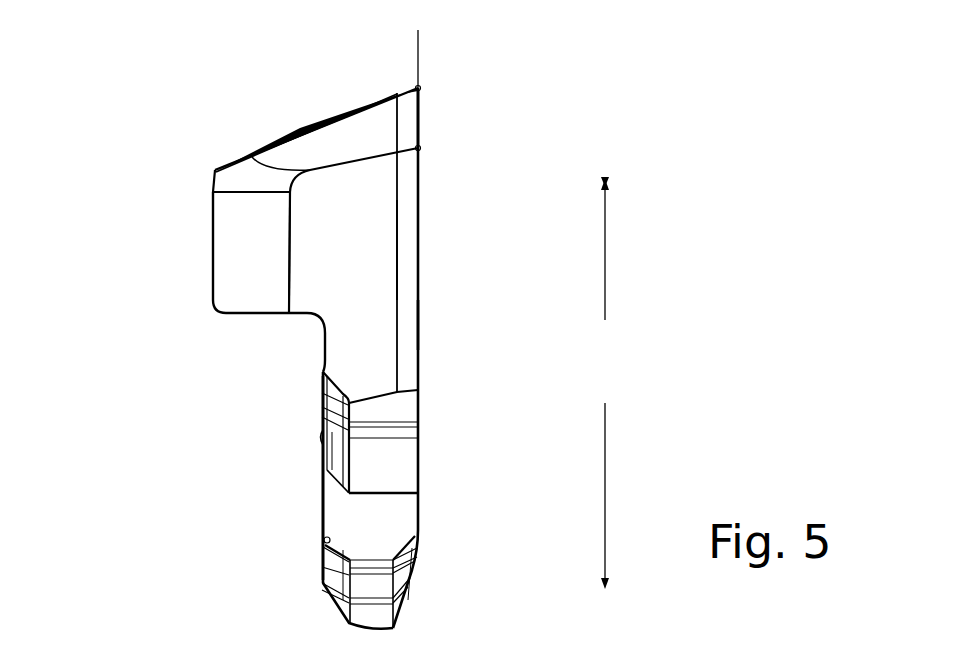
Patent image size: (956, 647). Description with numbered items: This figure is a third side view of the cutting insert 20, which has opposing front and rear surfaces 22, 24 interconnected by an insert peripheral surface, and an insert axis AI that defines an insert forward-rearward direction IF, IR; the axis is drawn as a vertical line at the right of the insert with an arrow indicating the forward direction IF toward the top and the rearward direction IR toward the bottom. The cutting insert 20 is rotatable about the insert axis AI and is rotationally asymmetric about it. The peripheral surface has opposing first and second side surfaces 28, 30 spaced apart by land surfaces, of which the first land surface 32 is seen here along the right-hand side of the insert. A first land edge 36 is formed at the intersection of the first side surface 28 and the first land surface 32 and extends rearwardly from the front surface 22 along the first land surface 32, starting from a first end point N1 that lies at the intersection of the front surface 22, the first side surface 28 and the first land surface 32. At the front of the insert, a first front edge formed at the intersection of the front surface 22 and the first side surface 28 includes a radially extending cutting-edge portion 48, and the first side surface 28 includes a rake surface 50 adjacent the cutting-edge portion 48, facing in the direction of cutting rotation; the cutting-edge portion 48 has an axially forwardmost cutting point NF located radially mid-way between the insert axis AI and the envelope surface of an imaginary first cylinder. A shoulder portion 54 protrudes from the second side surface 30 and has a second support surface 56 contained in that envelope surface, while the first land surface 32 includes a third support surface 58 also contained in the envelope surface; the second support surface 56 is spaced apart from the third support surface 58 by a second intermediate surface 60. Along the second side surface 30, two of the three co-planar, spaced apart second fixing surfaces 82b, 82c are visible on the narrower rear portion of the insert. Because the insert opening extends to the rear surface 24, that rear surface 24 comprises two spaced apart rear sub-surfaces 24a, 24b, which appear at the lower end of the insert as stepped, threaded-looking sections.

The cutting insert 20 is at (287, 336).
The front surface 22 is at (334, 287).
The rear surface 24 is at (423, 500).
The rear sub-surface 24a is at (403, 407).
The rear sub-surface 24b is at (375, 613).
The first side surface 28 is at (424, 322).
The second side surface 30 is at (316, 331).
The first land surface 32 is at (410, 269).
The first land edge 36 is at (419, 204).
The cutting-edge portion 48 is at (419, 108).
The rake surface 50 is at (419, 126).
The shoulder portion 54 is at (232, 183).
The second support surface 56 is at (240, 254).
The third support surface 58 is at (407, 232).
The second intermediate surface 60 is at (335, 254).
The second fixing surface 82b is at (320, 378).
The second fixing surface 82c is at (320, 510).
The insert axis AI is at (420, 46).
The axially forwardmost cutting point NF is at (418, 88).
The first end point N1 is at (418, 148).
The insert forward direction IF is at (615, 245).
The insert rearward direction IR is at (608, 509).